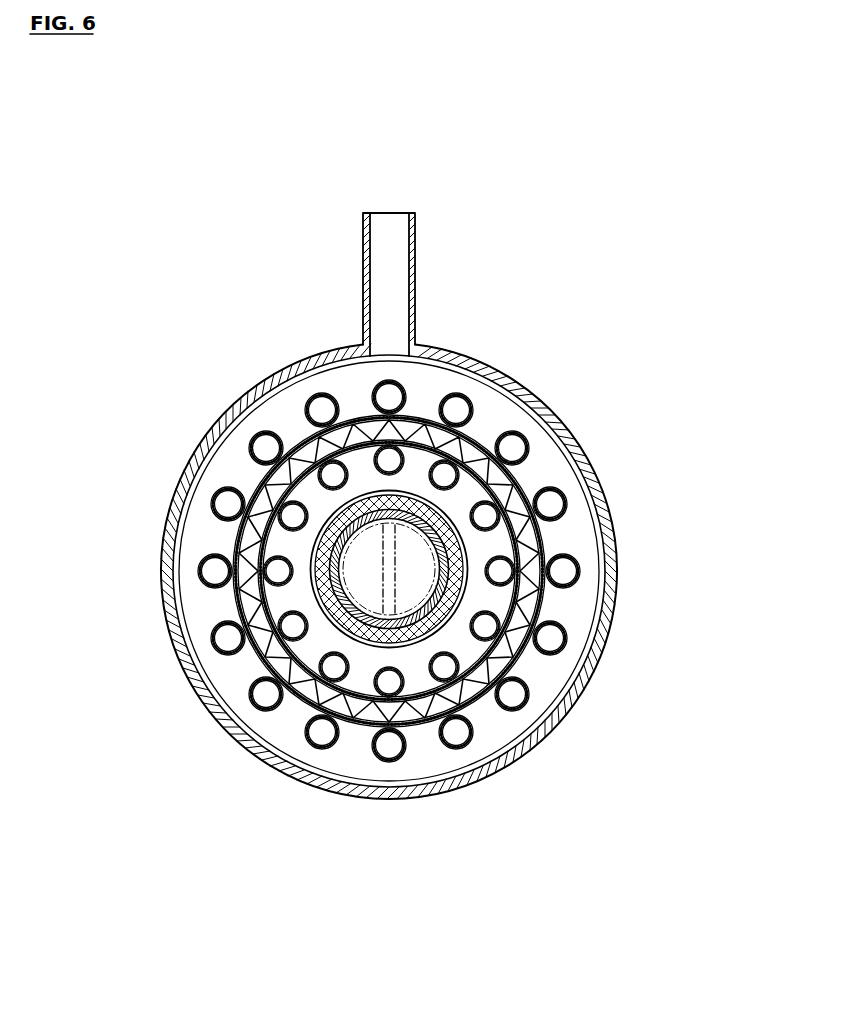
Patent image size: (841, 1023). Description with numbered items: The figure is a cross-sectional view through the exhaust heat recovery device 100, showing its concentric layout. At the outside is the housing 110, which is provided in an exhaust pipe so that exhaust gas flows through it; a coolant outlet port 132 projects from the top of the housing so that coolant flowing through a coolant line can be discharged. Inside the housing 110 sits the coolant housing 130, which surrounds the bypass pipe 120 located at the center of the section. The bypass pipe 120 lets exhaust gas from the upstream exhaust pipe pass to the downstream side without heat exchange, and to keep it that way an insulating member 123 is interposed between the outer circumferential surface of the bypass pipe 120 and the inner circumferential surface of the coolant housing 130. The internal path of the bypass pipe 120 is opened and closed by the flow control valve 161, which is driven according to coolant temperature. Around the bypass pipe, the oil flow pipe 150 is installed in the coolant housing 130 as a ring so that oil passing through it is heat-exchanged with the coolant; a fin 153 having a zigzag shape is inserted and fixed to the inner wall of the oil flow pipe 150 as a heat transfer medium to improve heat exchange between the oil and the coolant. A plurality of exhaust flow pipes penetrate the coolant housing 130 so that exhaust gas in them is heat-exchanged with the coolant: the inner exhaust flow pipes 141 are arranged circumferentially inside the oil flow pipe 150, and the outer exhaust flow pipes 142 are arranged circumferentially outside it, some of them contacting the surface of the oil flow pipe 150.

The exhaust heat recovery device 100 is at (560, 363).
The housing 110 is at (592, 437).
The bypass pipe 120 is at (453, 548).
The insulating member 123 is at (363, 632).
The coolant housing 130 is at (210, 674).
The coolant outlet port 132 is at (415, 272).
The inner exhaust flow pipes 141 is at (233, 537).
The outer exhaust flow pipes 142 is at (220, 490).
The oil flow pipe 150 is at (476, 696).
The fin 153 is at (498, 662).
The flow control valve 161 is at (410, 575).